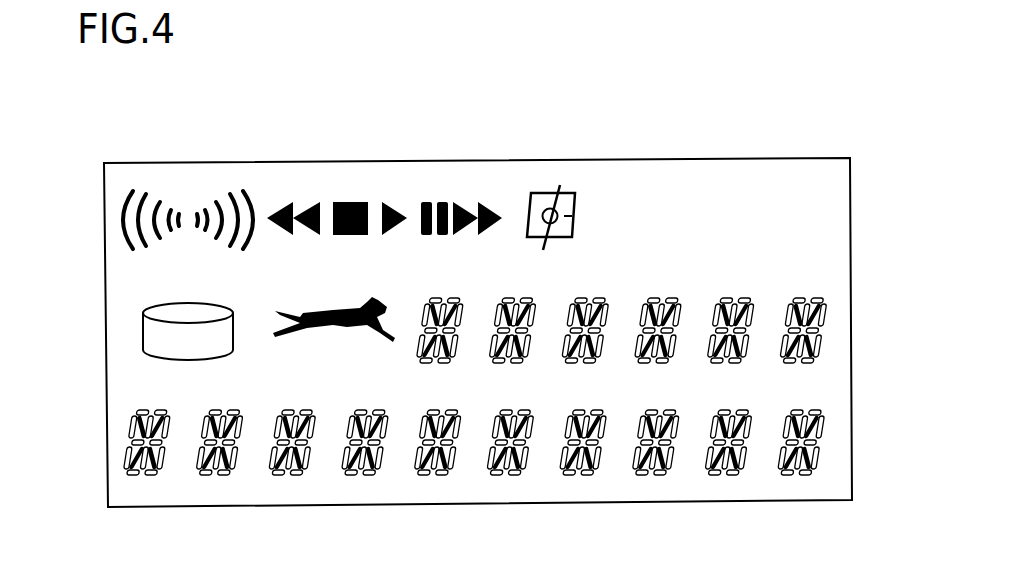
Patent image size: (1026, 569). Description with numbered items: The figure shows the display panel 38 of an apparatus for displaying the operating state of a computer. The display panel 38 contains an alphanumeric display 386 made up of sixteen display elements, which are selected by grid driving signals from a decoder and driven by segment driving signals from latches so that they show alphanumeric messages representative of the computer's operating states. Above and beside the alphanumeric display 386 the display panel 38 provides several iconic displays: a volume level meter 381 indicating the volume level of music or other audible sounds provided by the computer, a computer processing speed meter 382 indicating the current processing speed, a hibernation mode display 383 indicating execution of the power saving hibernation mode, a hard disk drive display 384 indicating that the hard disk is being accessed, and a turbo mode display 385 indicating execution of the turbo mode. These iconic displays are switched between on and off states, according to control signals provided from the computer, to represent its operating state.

The display panel 38 is at (850, 253).
The volume level meter 381 is at (211, 178).
The computer processing speed meter 382 is at (413, 187).
The hibernation mode display 383 is at (679, 180).
The hard disk drive display 384 is at (143, 342).
The turbo mode display 385 is at (277, 335).
The alphanumeric display 386 is at (827, 310).